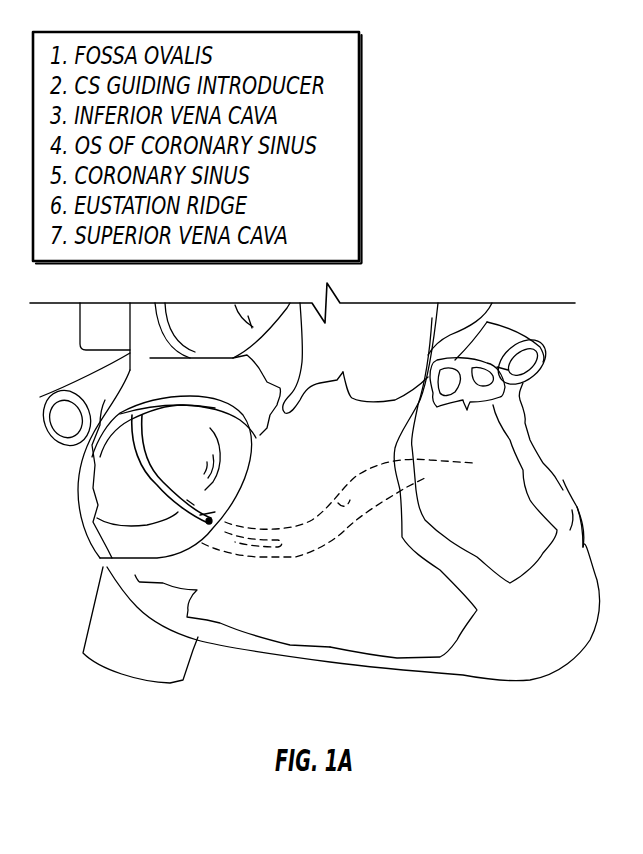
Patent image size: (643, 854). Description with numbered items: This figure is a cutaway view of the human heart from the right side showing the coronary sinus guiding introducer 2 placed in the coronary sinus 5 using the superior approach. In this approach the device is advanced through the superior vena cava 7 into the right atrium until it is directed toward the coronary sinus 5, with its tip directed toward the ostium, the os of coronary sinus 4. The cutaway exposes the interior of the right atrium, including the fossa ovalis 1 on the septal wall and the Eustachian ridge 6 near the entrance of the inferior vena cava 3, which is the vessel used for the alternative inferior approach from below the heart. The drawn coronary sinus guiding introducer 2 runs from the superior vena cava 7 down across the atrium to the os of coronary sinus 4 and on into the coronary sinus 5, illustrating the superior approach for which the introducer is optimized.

The fossa ovalis 1 is at (197, 459).
The CS guiding introducer 2 is at (158, 469).
The inferior vena cava 3 is at (127, 519).
The os of coronary sinus 4 is at (191, 522).
The coronary sinus 5 is at (337, 508).
The eustation ridge 6 is at (137, 535).
The superior vena cava 7 is at (182, 410).